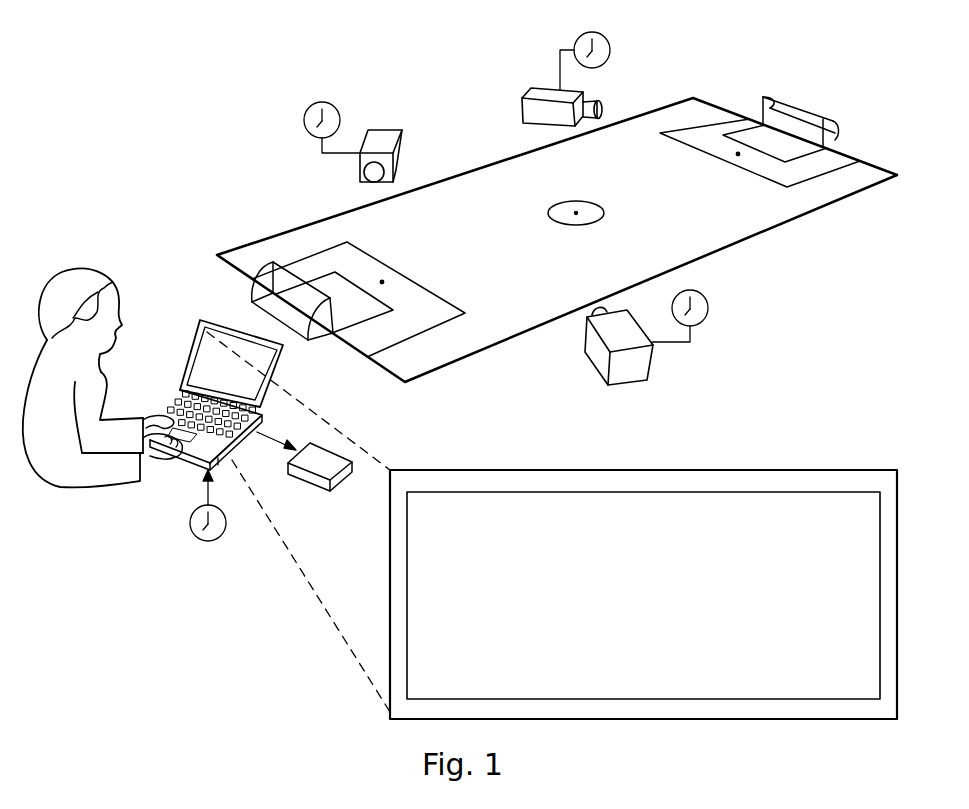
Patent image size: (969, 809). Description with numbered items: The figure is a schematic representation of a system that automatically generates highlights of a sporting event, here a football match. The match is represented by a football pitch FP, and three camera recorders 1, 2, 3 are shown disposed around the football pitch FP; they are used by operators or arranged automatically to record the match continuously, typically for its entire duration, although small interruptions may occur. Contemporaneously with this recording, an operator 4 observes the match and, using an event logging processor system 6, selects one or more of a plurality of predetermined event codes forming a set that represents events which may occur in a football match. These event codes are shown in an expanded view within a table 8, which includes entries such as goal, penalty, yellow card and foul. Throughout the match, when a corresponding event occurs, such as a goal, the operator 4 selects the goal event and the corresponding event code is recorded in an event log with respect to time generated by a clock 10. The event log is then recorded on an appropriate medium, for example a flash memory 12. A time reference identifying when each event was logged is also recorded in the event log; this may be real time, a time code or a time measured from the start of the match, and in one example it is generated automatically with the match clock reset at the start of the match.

The camera recorder 1 is at (353, 142).
The camera recorder 2 is at (566, 80).
The camera recorder 3 is at (646, 337).
The operator 4 is at (68, 272).
The event logging processor system 6 is at (200, 320).
The table 8 is at (450, 510).
The clock 10 is at (206, 541).
The flash memory 12 is at (330, 485).
The football pitch FP is at (758, 237).